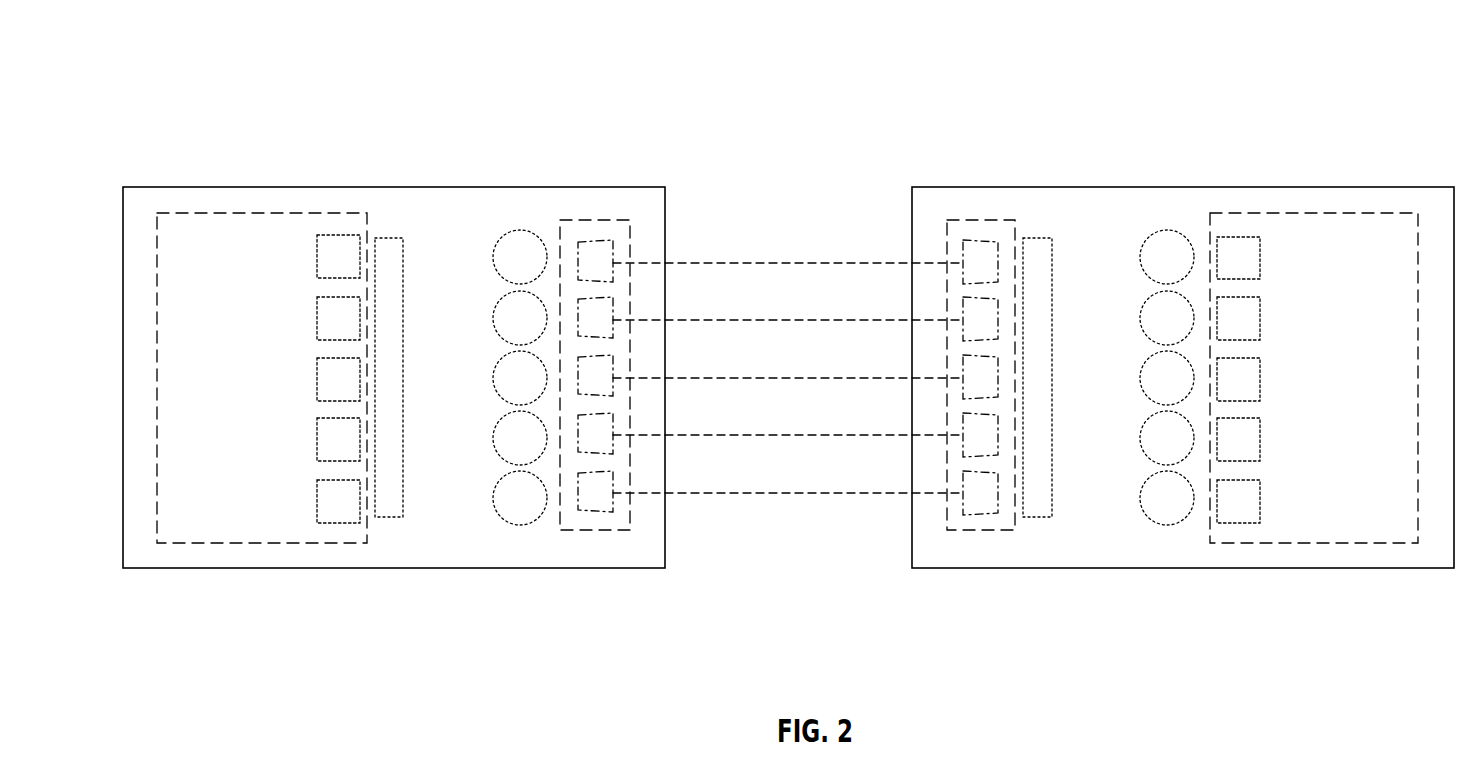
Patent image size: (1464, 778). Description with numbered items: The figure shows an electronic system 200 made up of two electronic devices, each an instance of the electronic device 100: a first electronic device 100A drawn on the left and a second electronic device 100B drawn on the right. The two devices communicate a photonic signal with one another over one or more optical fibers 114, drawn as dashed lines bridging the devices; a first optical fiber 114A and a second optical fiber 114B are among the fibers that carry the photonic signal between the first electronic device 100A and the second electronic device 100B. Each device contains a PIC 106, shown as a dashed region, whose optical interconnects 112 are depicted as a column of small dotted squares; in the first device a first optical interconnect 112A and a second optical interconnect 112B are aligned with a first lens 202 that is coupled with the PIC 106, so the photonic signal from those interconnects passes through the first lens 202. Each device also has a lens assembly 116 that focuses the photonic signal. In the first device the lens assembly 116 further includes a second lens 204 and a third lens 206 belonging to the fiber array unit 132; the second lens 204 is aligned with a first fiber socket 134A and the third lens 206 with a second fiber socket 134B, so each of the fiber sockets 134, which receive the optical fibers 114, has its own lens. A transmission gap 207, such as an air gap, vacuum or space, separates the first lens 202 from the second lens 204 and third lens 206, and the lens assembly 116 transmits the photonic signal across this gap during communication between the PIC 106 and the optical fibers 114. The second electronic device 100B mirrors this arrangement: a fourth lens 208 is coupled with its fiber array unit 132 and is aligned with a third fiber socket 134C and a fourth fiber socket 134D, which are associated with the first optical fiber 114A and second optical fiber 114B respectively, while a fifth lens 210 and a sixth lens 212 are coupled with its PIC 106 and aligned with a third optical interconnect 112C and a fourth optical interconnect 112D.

The electronic system 200 is at (243, 86).
The electronic device 100 is at (333, 163).
The first electronic device 100A is at (143, 557).
The second electronic device 100B is at (938, 560).
The PIC 106 is at (238, 510).
The optical interconnects 112 is at (301, 381).
The first optical interconnect 112A is at (326, 259).
The second optical interconnect 112B is at (326, 320).
The third optical interconnect 112C is at (1252, 254).
The fourth optical interconnect 112D is at (1252, 314).
The optical fibers 114 is at (872, 244).
The first optical fiber 114A is at (827, 263).
The second optical fiber 114B is at (880, 320).
The lens assembly 116 is at (440, 532).
The fiber array unit 132 is at (598, 522).
The fiber sockets 134 is at (610, 238).
The first fiber socket 134A is at (589, 256).
The second fiber socket 134B is at (586, 302).
The third fiber socket 134C is at (990, 252).
The fourth fiber socket 134D is at (992, 303).
The first lens 202 is at (388, 254).
The second lens 204 is at (522, 258).
The third lens 206 is at (522, 319).
The transmission gap 207 is at (456, 388).
The fourth lens 208 is at (1035, 256).
The fifth lens 210 is at (1165, 258).
The sixth lens 212 is at (1165, 319).